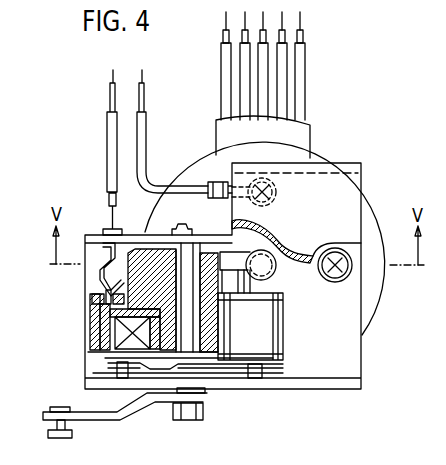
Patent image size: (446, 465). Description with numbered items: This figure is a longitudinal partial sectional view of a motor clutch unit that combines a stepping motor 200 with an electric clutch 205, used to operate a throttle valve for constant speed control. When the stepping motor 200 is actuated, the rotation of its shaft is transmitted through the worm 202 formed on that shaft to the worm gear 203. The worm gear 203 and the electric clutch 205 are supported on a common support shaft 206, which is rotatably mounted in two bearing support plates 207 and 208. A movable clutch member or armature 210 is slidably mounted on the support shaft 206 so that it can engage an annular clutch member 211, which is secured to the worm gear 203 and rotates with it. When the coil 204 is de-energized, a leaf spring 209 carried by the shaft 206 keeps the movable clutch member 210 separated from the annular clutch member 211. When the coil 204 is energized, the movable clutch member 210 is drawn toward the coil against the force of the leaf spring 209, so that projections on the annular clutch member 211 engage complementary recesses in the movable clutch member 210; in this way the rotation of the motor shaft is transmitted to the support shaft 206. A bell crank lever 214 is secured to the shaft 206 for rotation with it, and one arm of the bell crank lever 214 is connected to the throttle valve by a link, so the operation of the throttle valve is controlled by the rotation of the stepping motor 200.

The stepping motor 200 is at (374, 238).
The worm 202 is at (276, 272).
The worm gear 203 is at (238, 272).
The coil 204 is at (115, 332).
The electric clutch 205 is at (145, 277).
The support shaft 206 is at (217, 342).
The bearing support plate 207 is at (158, 233).
The bearing support plate 208 is at (318, 389).
The leaf spring 209 is at (145, 375).
The movable clutch member 210 is at (90, 357).
The annular clutch member 211 is at (98, 337).
The bell crank lever 214 is at (133, 418).